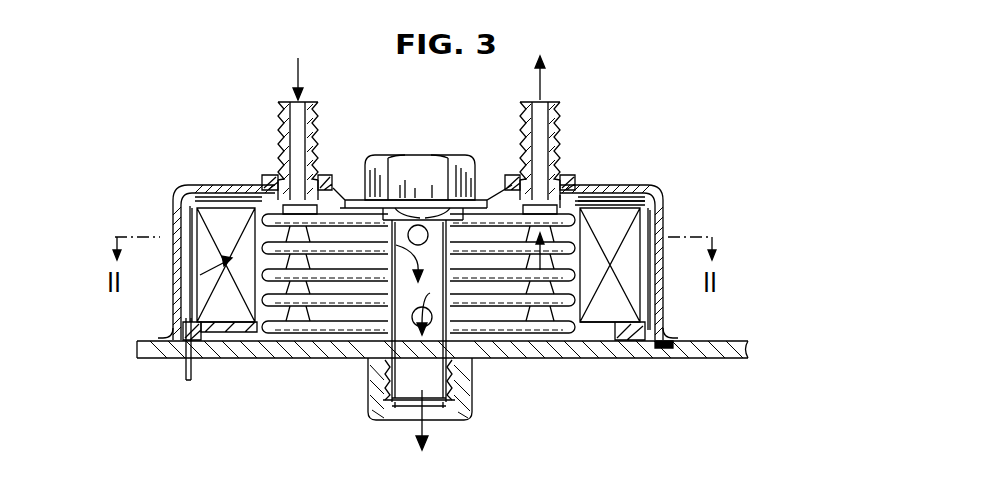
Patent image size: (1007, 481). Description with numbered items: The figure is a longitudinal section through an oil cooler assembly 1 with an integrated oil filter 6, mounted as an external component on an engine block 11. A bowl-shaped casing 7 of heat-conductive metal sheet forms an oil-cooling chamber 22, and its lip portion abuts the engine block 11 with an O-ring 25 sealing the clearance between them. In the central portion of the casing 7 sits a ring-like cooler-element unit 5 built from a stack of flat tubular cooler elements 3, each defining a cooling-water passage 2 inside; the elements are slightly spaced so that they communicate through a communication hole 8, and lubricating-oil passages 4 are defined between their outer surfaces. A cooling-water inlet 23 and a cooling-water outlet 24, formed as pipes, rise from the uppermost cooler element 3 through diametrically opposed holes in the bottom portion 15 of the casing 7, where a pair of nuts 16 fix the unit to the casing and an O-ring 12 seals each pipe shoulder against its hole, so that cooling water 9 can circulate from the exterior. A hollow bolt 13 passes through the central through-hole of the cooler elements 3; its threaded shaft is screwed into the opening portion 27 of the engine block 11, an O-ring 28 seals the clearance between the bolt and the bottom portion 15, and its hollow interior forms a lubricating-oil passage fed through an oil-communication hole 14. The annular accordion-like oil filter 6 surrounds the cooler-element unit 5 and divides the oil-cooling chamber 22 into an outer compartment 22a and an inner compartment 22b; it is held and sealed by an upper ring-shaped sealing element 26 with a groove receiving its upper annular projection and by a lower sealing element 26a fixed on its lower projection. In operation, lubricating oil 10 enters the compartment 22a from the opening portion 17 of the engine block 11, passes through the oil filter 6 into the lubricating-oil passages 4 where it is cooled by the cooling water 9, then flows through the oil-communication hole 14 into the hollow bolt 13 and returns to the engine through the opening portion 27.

The oil cooler assembly 1 is at (175, 188).
The cooling-water passage 2 is at (352, 205).
The cooler element 3 is at (420, 161).
The lubricating-oil passage 4 is at (338, 240).
The cooler-element unit 5 is at (385, 165).
The oil filter 6 is at (236, 200).
The casing 7 is at (185, 188).
The communication hole 8 is at (266, 175).
The cooling water 9 is at (303, 70).
The lubricating oil 10 is at (193, 362).
The engine block 11 is at (722, 360).
The O-ring 12 is at (604, 196).
The hollow bolt 13 is at (462, 157).
The oil-communication hole 14 is at (380, 362).
The bottom portion 15 is at (210, 196).
The nut 16 is at (568, 183).
The opening portion 17 is at (186, 365).
The oil-cooling chamber 22 is at (186, 222).
The compartment 22a is at (188, 265).
The compartment 22b is at (248, 332).
The cooling-water inlet 23 is at (292, 108).
The cooling-water outlet 24 is at (537, 100).
The O-ring 25 is at (666, 350).
The sealing element 26 is at (660, 190).
The sealing element 26a is at (627, 342).
The opening portion 27 is at (405, 402).
The O-ring 28 is at (482, 198).